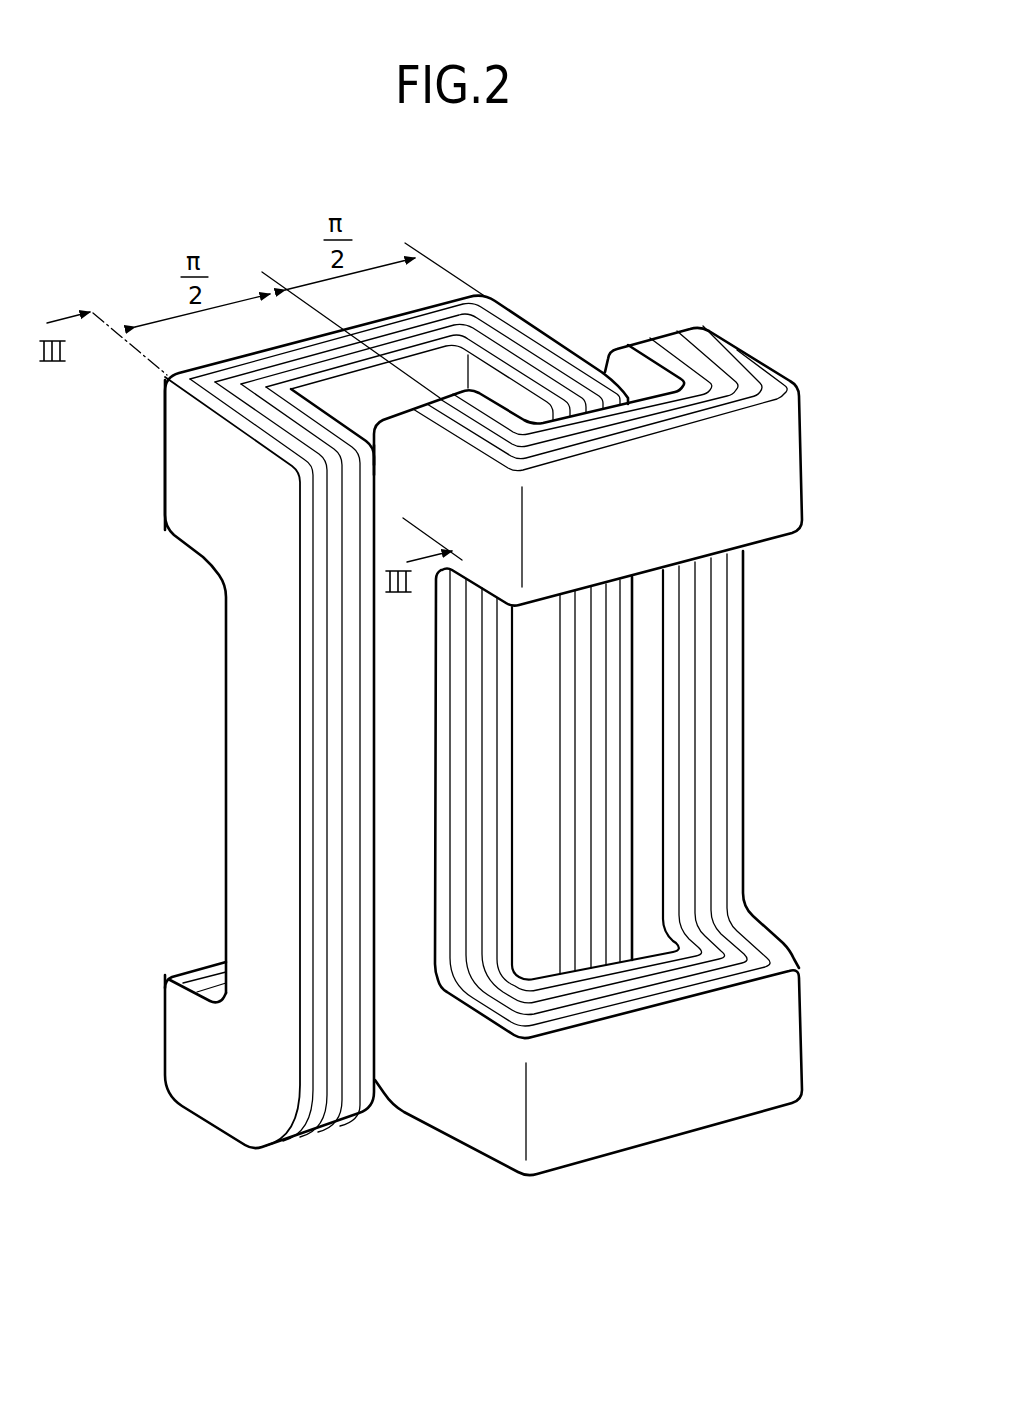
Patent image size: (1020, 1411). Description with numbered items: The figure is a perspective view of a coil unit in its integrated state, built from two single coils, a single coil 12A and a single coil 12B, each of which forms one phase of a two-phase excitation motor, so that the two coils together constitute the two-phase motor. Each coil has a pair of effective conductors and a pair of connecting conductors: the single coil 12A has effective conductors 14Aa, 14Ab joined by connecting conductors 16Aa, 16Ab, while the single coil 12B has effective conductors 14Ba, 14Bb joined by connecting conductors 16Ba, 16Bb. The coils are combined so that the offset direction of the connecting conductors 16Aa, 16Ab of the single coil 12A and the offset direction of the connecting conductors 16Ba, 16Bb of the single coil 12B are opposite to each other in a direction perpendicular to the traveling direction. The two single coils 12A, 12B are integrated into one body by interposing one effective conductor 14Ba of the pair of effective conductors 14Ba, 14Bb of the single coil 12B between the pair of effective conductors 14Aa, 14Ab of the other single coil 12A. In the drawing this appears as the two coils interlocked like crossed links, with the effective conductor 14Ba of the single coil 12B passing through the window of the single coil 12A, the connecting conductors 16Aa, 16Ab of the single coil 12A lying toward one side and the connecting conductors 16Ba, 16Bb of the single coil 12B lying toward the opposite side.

The single coil 12A is at (524, 290).
The single coil 12B is at (757, 312).
The effective conductor 14Aa is at (320, 715).
The effective conductor 14Ab is at (598, 743).
The effective conductor 14Ba is at (474, 915).
The effective conductor 14Bb is at (720, 830).
The connecting conductor 16Aa is at (247, 378).
The connecting conductor 16Ab is at (204, 973).
The connecting conductor 16Ba is at (785, 480).
The connecting conductor 16Bb is at (650, 1115).